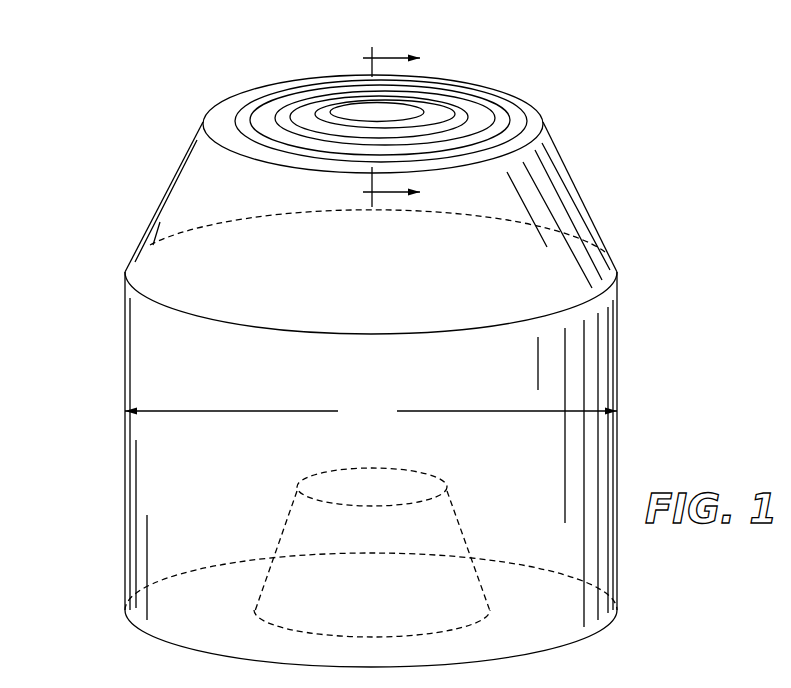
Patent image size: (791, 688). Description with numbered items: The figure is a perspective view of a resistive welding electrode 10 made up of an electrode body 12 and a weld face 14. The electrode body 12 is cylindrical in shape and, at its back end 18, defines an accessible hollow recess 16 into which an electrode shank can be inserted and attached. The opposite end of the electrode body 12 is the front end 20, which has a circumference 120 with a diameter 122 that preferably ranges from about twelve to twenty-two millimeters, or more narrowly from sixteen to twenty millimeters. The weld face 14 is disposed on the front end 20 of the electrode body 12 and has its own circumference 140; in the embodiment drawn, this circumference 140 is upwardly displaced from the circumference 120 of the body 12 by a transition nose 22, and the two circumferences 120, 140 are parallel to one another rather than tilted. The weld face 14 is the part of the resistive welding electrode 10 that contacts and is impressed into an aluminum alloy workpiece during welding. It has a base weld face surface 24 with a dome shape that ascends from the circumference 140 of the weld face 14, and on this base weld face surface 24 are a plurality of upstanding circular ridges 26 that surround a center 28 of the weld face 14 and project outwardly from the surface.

The resistive welding electrode 10 is at (646, 125).
The electrode body 12 is at (581, 375).
The weld face 14 is at (221, 62).
The hollow recess 16 is at (283, 515).
The back end 18 is at (139, 628).
The front end 20 is at (123, 279).
The transition nose 22 is at (185, 213).
The base weld face surface 24 is at (522, 122).
The upstanding circular ridges 26 is at (493, 110).
The center of the weld face 28 is at (363, 107).
The circumference of the front end 120 is at (166, 306).
The diameter 122 is at (371, 412).
The circumference of the weld face 140 is at (205, 140).